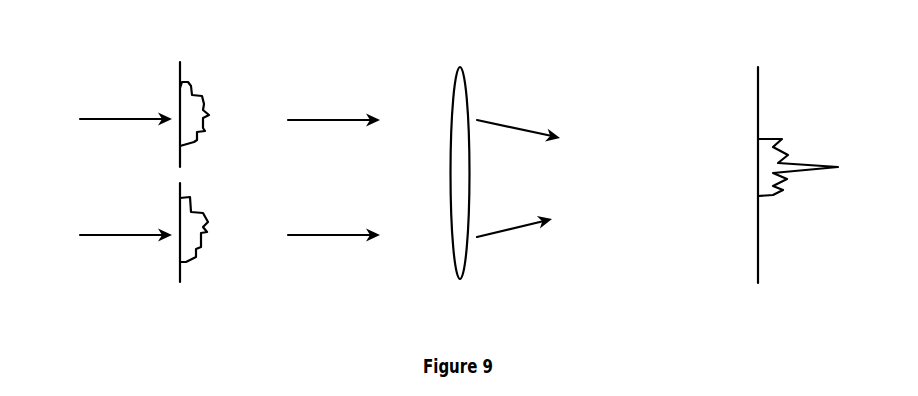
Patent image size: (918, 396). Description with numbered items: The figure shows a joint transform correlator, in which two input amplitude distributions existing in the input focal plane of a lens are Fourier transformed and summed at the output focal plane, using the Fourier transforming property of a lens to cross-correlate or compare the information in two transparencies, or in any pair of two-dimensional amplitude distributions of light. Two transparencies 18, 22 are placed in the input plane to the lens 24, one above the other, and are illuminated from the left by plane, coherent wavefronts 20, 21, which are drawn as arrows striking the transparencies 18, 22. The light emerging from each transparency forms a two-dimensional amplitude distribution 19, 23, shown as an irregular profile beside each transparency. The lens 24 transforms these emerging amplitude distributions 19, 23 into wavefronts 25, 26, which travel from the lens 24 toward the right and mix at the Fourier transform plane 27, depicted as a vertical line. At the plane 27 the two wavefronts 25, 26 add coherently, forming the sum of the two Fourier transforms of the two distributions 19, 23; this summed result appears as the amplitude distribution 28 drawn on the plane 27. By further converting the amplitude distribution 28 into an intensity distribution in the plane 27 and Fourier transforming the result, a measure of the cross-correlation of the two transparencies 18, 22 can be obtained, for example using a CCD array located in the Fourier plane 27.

The transparency 18 is at (178, 90).
The two-dimensional amplitude distribution 19 is at (213, 102).
The plane coherent wavefront 20 is at (99, 117).
The plane coherent wavefront 21 is at (99, 232).
The transparency 22 is at (180, 245).
The two-dimensional amplitude distribution 23 is at (215, 237).
The lens 24 is at (468, 58).
The wavefront 25 is at (542, 137).
The wavefront 26 is at (537, 227).
The Fourier transform plane 27 is at (758, 58).
The amplitude distribution 28 is at (795, 147).